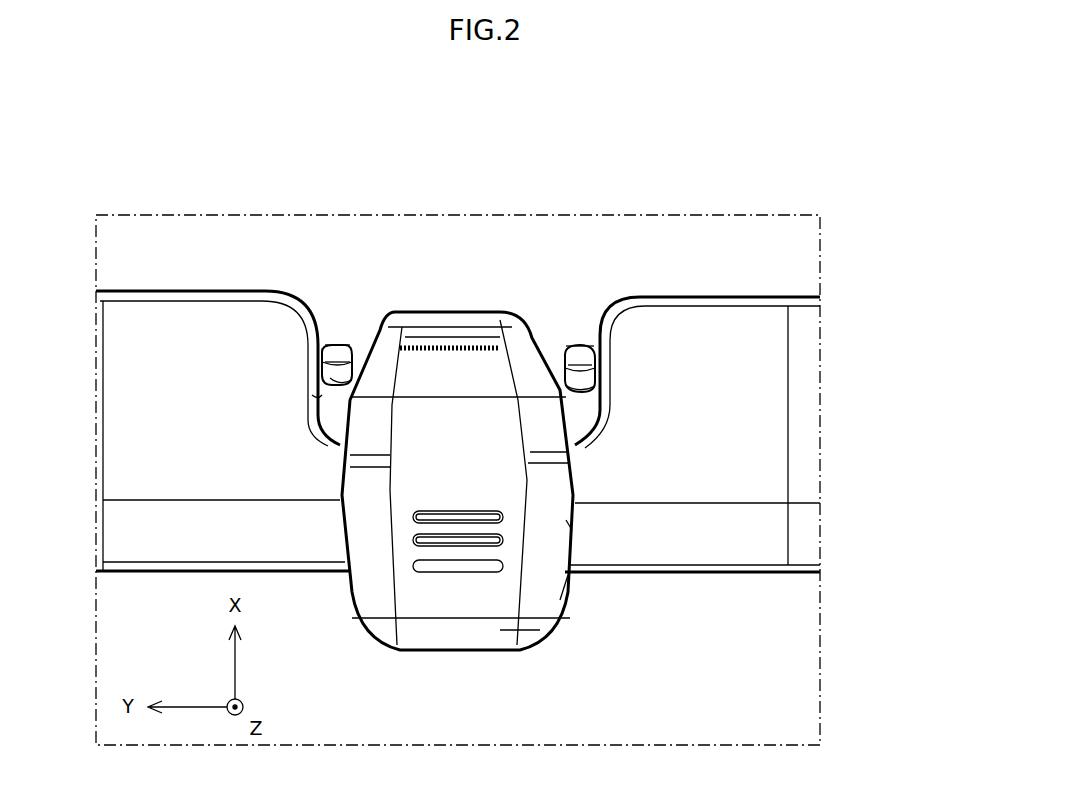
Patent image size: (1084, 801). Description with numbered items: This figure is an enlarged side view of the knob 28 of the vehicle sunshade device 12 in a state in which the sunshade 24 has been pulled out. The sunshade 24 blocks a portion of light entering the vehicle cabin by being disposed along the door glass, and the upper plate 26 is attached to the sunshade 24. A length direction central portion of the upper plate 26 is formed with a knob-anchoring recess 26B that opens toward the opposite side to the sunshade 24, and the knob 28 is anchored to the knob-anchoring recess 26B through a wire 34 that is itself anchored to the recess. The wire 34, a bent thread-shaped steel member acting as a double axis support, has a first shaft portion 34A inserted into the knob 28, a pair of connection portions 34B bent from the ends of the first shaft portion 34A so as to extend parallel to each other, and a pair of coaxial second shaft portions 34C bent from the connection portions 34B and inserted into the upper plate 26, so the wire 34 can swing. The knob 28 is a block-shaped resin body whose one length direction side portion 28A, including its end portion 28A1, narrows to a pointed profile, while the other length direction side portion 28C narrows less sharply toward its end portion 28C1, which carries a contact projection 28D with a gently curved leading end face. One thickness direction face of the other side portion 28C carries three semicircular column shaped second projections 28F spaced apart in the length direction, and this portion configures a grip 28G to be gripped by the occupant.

The vehicle sunshade device 12 is at (735, 226).
The sunshade 24 is at (780, 613).
The upper plate 26 is at (143, 288).
The knob-anchoring recess 26B is at (318, 393).
The knob 28 is at (493, 652).
The one length direction side portion 28A is at (495, 375).
The one length direction side end portion 28A1 is at (470, 335).
The other length direction side portion 28C is at (575, 580).
The other length direction side end portion 28C1 is at (500, 632).
The contact projection 28D is at (445, 650).
The second projections 28F is at (470, 565).
The grip 28G is at (578, 527).
The wire 34 is at (345, 345).
The first shaft portion 34A is at (348, 378).
The connection portions 34B is at (330, 366).
The second shaft portions 34C is at (336, 350).